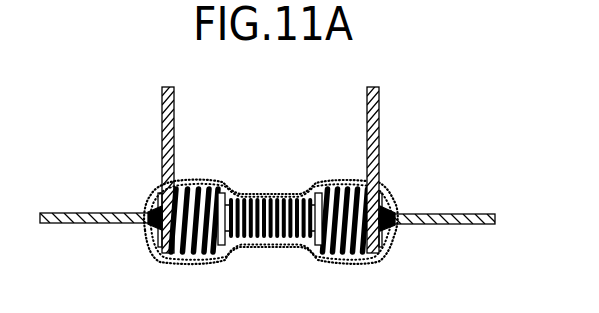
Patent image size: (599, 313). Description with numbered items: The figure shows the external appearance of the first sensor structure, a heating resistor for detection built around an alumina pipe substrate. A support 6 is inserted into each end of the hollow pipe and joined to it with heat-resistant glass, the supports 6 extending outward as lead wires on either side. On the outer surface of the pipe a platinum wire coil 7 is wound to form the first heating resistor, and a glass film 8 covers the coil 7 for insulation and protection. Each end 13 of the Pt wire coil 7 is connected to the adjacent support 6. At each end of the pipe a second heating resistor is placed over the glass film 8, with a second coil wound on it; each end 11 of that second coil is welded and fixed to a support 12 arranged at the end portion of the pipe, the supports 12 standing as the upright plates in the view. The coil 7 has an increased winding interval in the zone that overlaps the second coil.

The support 6 is at (470, 226).
The Pt wire coil 7 is at (261, 199).
The glass film 8 is at (225, 192).
The end of second coil 11 is at (381, 233).
The support of second coil 12 is at (162, 166).
The end of Pt wire 13 is at (388, 212).